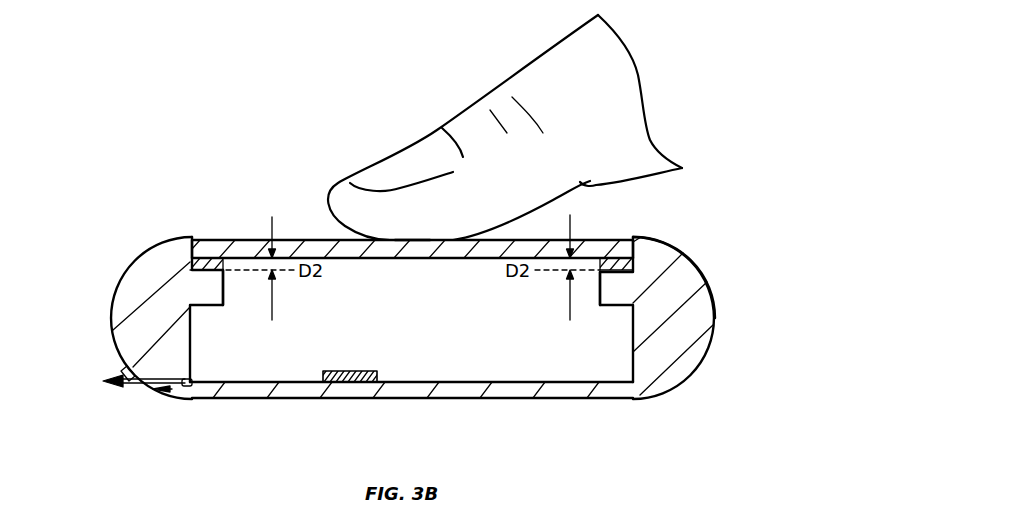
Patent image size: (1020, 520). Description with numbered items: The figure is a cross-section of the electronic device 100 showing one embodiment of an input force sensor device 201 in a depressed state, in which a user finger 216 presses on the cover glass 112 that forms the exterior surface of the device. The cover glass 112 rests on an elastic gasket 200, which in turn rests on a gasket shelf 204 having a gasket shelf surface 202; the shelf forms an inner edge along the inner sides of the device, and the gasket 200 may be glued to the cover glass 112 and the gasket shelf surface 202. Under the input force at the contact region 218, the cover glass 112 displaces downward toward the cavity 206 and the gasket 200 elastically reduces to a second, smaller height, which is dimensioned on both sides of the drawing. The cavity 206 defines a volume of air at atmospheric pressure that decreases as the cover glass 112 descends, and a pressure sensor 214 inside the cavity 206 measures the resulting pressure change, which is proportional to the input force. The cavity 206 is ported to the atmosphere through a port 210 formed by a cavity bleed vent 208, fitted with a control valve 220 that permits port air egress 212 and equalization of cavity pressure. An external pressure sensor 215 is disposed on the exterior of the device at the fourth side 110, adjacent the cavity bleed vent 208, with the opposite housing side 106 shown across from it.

The electronic device 100 is at (178, 126).
The housing 106 is at (718, 320).
The fourth side 110 is at (110, 322).
The cover glass 112 is at (255, 240).
The gasket 200 is at (192, 264).
The input force sensor device 201 is at (718, 268).
The gasket shelf surface 202 is at (208, 264).
The gasket shelf 204 is at (224, 304).
The cavity 206 is at (462, 360).
The cavity bleed vent 208 is at (164, 392).
The port 210 is at (196, 380).
The port air egress 212 is at (136, 388).
The pressure sensor 214 is at (347, 370).
The external pressure sensor 215 is at (123, 373).
The user finger 216 is at (512, 78).
The contact region 218 is at (410, 240).
The control valve 220 is at (196, 388).